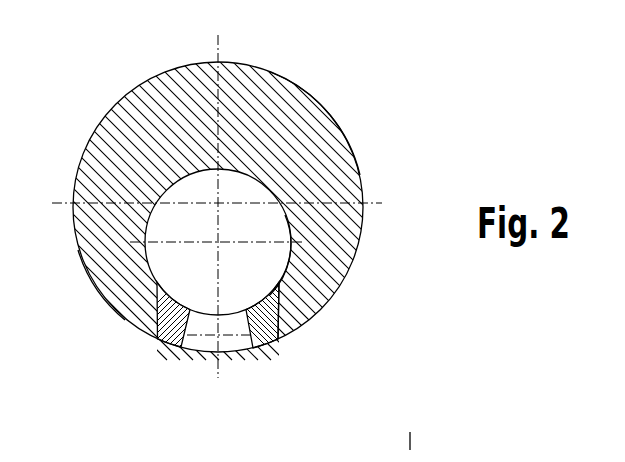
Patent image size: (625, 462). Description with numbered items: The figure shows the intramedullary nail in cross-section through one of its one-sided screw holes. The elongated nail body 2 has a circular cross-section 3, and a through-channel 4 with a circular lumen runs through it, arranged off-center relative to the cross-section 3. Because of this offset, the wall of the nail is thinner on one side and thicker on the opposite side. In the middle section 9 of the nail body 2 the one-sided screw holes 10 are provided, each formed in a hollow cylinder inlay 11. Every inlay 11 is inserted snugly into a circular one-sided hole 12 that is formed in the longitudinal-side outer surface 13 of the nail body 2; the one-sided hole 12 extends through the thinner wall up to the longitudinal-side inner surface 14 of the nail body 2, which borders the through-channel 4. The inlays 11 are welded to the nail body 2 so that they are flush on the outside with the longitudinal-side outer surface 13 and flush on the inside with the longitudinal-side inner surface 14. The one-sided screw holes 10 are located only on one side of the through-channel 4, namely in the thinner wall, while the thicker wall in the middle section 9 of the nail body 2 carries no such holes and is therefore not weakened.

The nail body 2 is at (117, 100).
The circular cross-section 3 is at (305, 93).
The through-channel 4 is at (165, 222).
The middle section 9 is at (100, 290).
The one-sided screw hole 10 is at (215, 352).
The hollow cylinder inlay 11 is at (260, 346).
The one-sided hole 12 is at (276, 338).
The longitudinal-side outer surface 13 is at (352, 145).
The longitudinal-side inner surface 14 is at (278, 290).